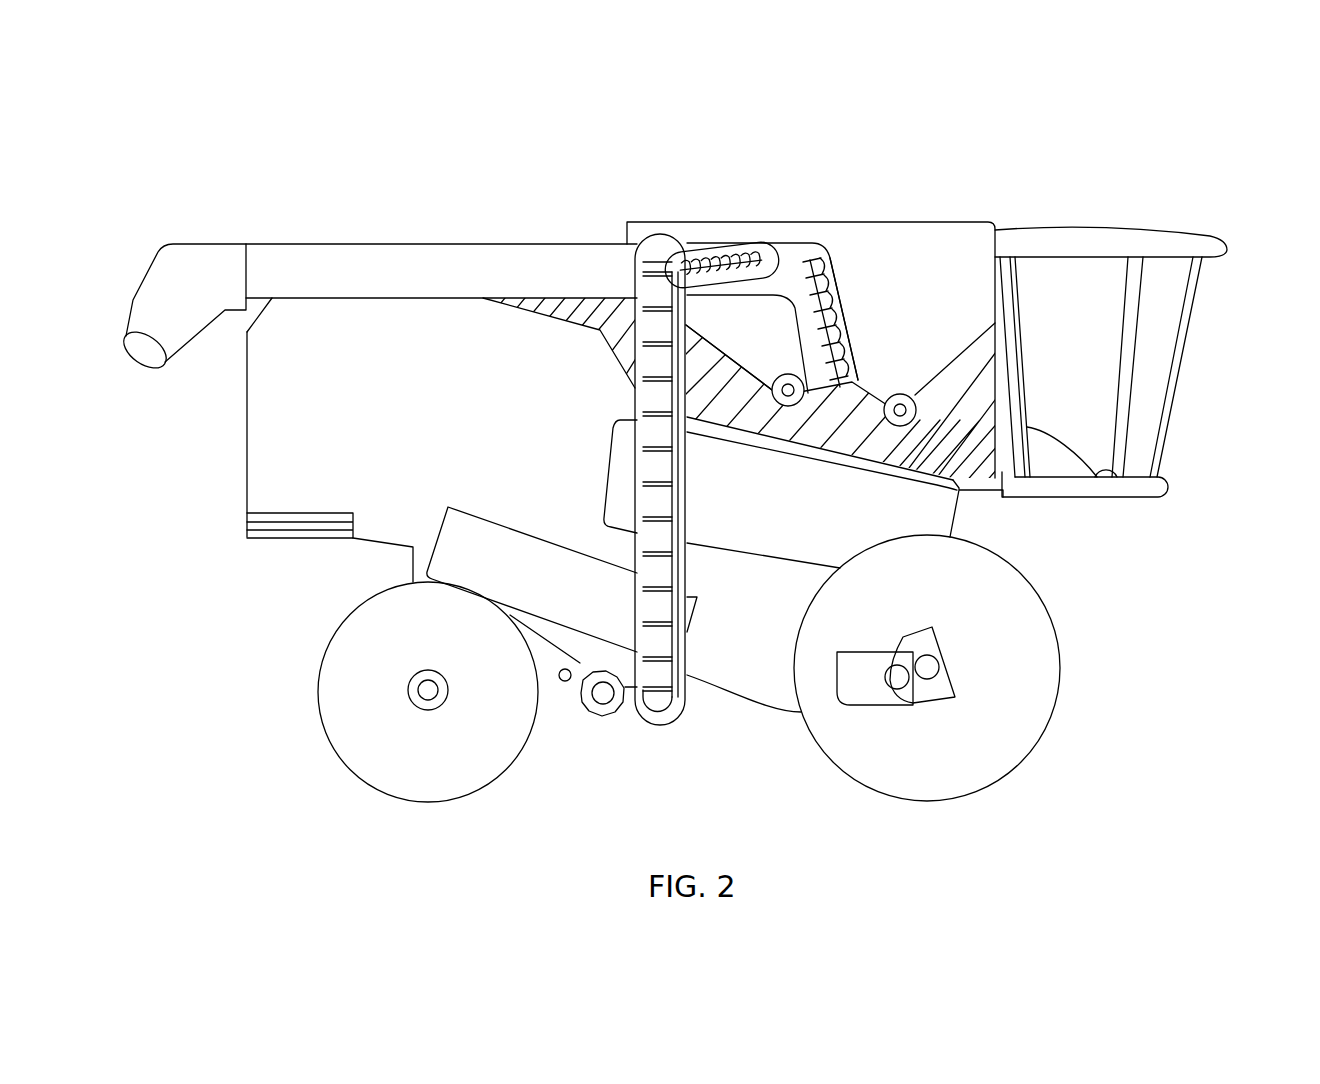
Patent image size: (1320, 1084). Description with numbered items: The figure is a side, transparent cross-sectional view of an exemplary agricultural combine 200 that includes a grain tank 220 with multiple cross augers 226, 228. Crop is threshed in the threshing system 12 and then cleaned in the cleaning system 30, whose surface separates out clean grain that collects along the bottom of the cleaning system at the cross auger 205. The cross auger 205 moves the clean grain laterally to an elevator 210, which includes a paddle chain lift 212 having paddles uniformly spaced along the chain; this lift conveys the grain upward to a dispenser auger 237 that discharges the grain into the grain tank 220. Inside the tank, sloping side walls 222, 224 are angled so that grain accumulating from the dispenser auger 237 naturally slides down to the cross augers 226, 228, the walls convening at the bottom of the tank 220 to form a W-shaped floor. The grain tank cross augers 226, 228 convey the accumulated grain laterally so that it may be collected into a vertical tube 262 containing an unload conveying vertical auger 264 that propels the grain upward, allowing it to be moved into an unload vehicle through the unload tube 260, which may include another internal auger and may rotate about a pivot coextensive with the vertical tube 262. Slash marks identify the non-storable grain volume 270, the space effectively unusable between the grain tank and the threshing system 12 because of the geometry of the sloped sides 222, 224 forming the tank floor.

The agricultural combine 200 is at (698, 463).
The threshing system 12 is at (770, 540).
The cleaning system 30 is at (455, 557).
The cross auger 205 is at (670, 730).
The elevator 210 is at (600, 330).
The paddle chain lift 212 is at (645, 272).
The grain tank 220 is at (962, 267).
The sloping side wall 222 is at (740, 372).
The sloping side wall 224 is at (953, 370).
The cross auger 226 is at (790, 407).
The cross auger 228 is at (915, 405).
The dispenser auger 237 is at (723, 257).
The unload tube 260 is at (300, 258).
The vertical tube 262 is at (843, 293).
The unload conveying vertical auger 264 is at (813, 263).
The non-storable grain volume 270 is at (975, 445).